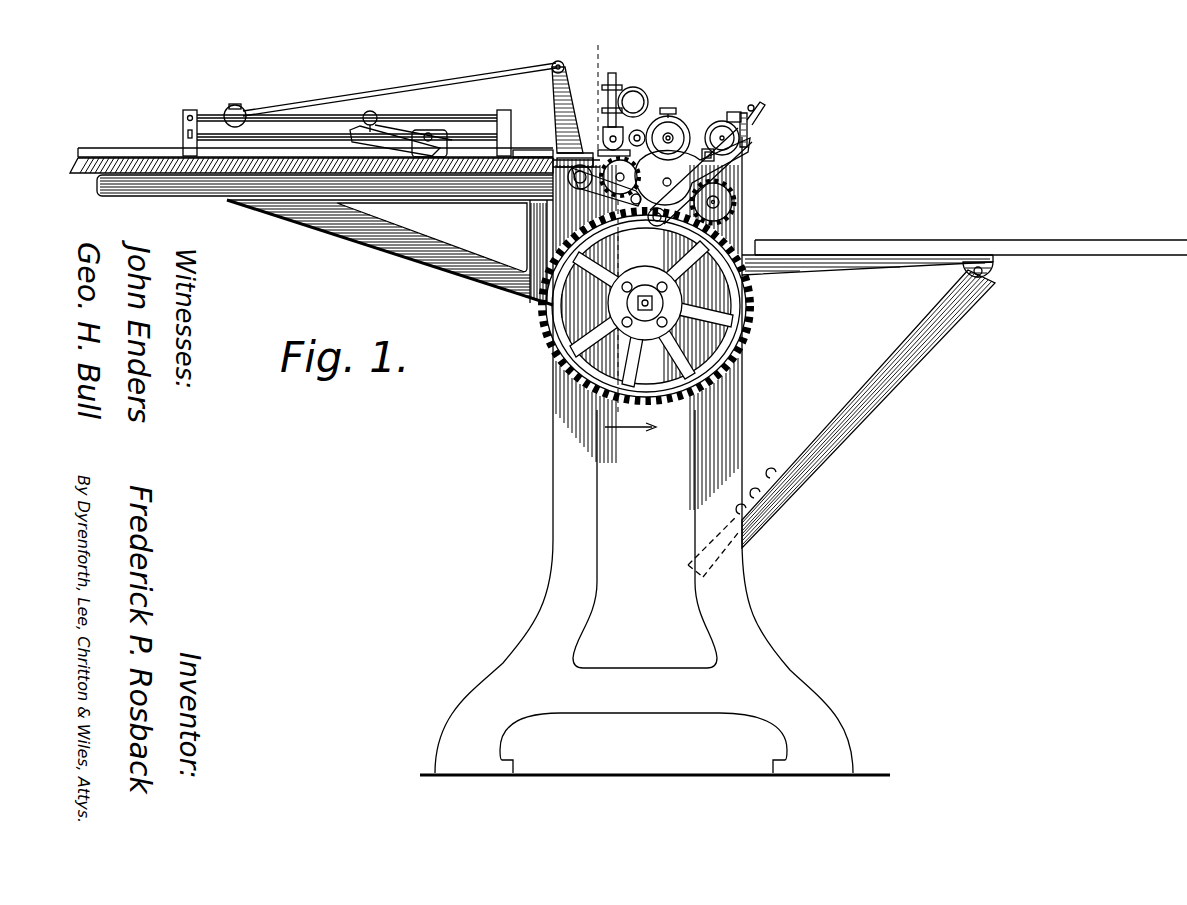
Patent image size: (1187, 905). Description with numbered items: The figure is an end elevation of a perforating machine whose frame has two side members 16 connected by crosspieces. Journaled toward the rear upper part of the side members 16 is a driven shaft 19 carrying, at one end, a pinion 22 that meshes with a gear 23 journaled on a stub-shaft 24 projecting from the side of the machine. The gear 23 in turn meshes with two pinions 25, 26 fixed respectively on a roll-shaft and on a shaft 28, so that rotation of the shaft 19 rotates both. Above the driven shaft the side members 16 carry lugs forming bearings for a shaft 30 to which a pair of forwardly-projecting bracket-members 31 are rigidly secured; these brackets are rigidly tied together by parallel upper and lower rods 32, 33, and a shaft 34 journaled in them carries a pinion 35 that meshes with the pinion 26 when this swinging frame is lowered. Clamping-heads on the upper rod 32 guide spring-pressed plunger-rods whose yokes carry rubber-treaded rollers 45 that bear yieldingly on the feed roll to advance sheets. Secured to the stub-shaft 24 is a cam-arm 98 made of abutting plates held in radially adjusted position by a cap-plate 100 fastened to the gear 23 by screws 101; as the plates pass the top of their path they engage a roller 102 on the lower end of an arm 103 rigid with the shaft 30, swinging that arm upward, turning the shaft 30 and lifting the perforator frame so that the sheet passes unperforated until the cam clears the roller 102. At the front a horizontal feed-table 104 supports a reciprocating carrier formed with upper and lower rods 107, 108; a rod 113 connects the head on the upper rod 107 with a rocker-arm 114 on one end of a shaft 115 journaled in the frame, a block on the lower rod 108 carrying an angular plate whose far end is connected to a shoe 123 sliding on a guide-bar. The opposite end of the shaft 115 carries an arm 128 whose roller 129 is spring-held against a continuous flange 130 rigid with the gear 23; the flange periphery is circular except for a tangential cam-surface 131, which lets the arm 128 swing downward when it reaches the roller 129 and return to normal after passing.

The side members 16 is at (732, 440).
The shaft 19 is at (720, 200).
The pinion 22 is at (724, 207).
The gear 23 is at (750, 300).
The stub-shaft 24 is at (640, 304).
The pinion 25 is at (560, 130).
The pinion 26 is at (714, 155).
The shaft 28 is at (757, 167).
The shaft 30 is at (728, 136).
The bracket-members 31 is at (645, 103).
The upper rod 32 is at (632, 96).
The lower rod 33 is at (641, 140).
The shaft 34 is at (673, 134).
The pinion 35 is at (693, 128).
The rollers 45 is at (560, 98).
The cam-arm 98 is at (700, 331).
The cap-plate 100 is at (672, 313).
The screws 101 is at (626, 321).
The roller 102 is at (666, 217).
The arm 103 is at (742, 180).
The feed-table 104 is at (157, 178).
The upper rod 107 is at (286, 118).
The lower rod 108 is at (260, 146).
The rod 113 is at (374, 92).
The rocker-arm 114 is at (554, 62).
The shaft 115 is at (563, 178).
The shoe 123 is at (388, 154).
The arm 128 is at (531, 214).
The roller 129 is at (560, 290).
The flange 130 is at (588, 380).
The cam-surface 131 is at (735, 260).